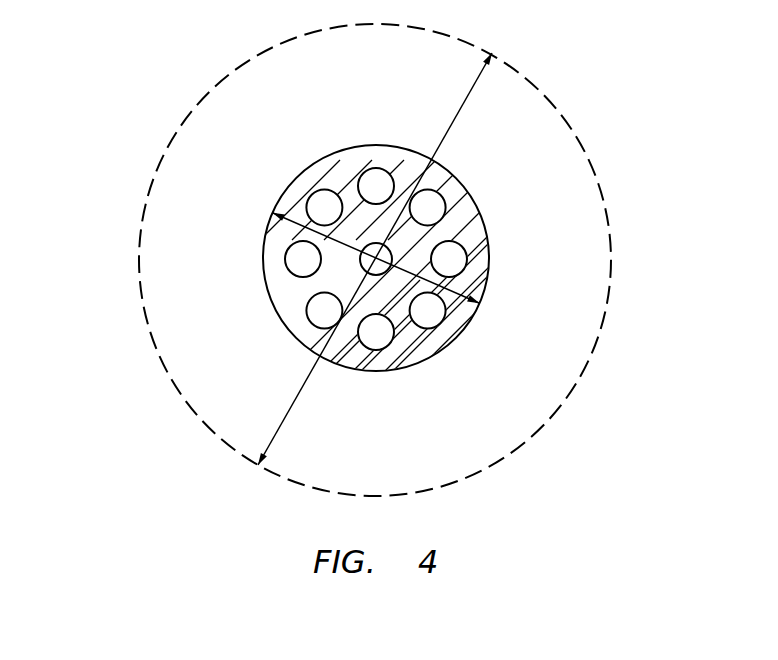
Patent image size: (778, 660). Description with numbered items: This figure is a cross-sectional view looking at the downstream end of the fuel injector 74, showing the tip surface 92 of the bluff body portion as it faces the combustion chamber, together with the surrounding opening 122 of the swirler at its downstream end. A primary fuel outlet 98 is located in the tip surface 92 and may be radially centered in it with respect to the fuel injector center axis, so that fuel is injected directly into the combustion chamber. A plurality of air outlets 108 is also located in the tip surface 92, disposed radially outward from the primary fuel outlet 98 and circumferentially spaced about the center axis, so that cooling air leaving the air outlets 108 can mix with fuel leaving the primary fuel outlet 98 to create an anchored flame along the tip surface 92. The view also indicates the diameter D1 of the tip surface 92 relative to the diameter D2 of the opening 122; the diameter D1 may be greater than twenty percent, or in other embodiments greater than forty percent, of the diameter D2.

The fuel injector 74 is at (583, 98).
The opening 122 is at (141, 305).
The tip surface 92 is at (472, 236).
The air outlets 108 is at (429, 207).
The primary fuel outlet 98 is at (378, 268).
The diameter of the tip surface D1 is at (300, 200).
The diameter of the opening D2 is at (460, 107).